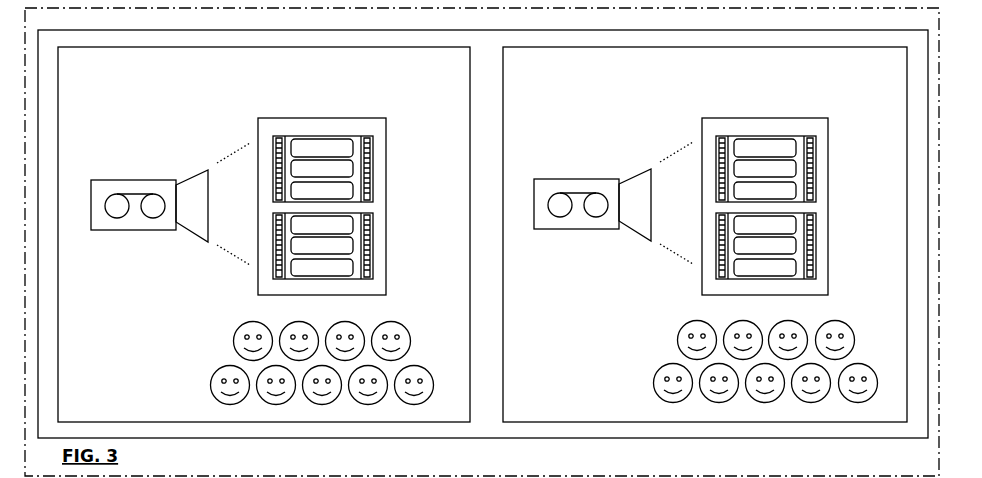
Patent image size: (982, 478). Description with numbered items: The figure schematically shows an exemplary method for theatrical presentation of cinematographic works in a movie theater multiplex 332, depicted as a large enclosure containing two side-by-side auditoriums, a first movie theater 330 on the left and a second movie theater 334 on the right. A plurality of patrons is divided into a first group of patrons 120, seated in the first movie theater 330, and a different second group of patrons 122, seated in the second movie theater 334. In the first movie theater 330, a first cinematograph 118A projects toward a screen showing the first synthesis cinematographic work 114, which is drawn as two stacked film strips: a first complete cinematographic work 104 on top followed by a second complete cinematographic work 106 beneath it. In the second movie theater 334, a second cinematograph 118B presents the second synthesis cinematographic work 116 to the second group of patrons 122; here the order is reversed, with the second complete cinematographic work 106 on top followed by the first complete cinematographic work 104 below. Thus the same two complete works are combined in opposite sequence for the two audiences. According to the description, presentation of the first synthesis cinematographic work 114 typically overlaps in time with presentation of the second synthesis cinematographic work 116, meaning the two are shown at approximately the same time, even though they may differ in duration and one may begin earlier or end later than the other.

The movie theater multiplex 332 is at (822, 438).
The first movie theater 330 is at (264, 234).
The second movie theater 334 is at (705, 234).
The first synthesis cinematographic work 114 is at (343, 118).
The second synthesis cinematographic work 116 is at (777, 118).
The first complete cinematographic work 104 is at (373, 163).
The second complete cinematographic work 106 is at (373, 243).
The first cinematograph 118A is at (122, 232).
The second cinematograph 118B is at (567, 232).
The first group of patrons 120 is at (203, 358).
The second group of patrons 122 is at (645, 358).